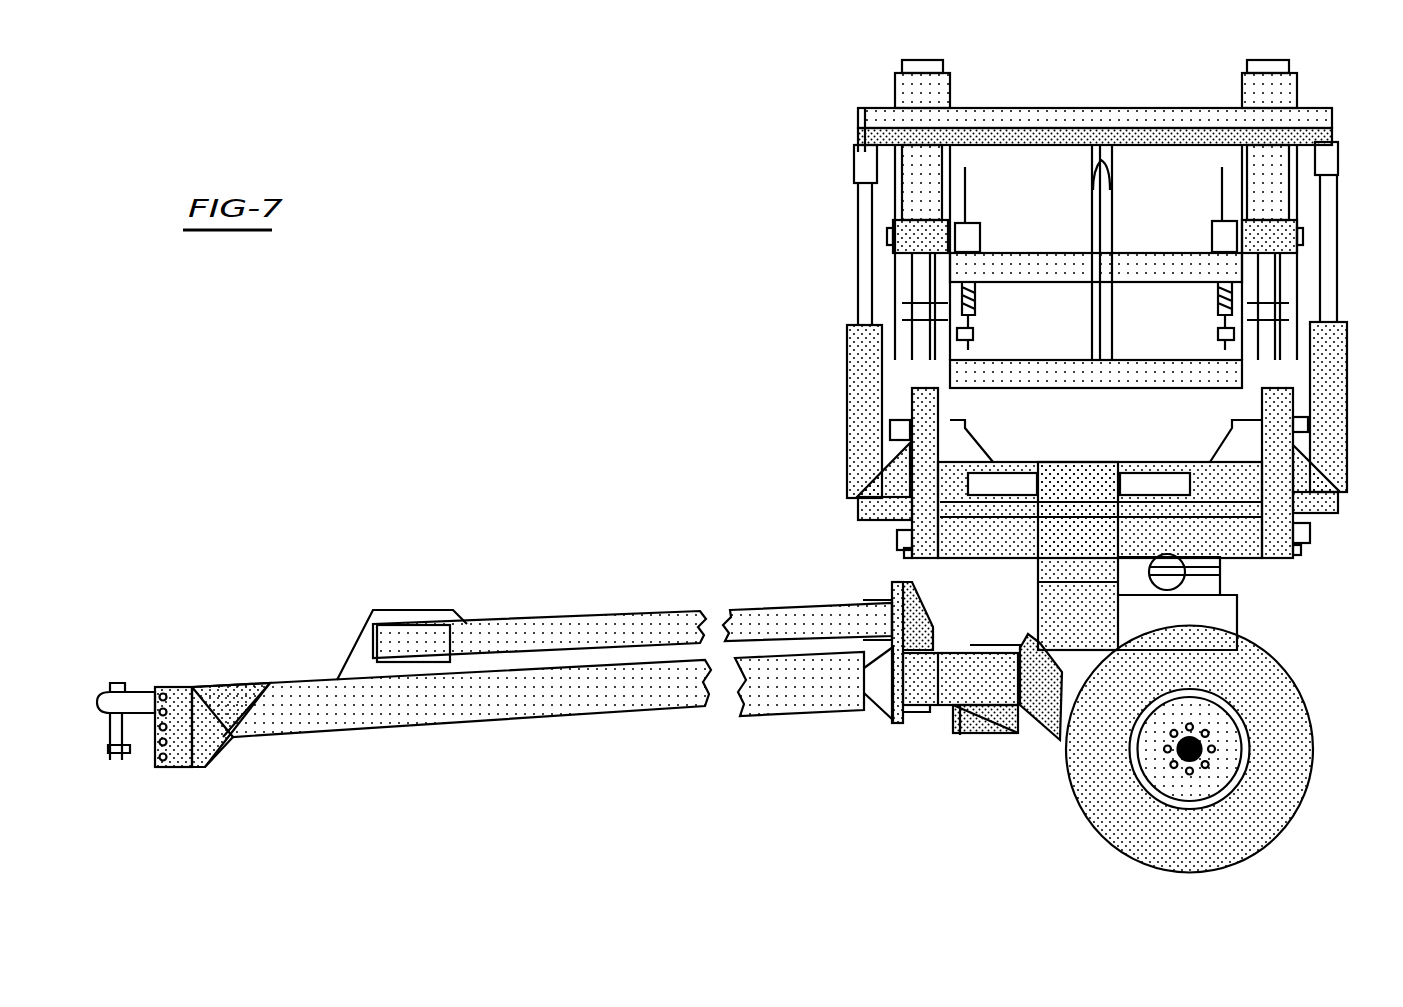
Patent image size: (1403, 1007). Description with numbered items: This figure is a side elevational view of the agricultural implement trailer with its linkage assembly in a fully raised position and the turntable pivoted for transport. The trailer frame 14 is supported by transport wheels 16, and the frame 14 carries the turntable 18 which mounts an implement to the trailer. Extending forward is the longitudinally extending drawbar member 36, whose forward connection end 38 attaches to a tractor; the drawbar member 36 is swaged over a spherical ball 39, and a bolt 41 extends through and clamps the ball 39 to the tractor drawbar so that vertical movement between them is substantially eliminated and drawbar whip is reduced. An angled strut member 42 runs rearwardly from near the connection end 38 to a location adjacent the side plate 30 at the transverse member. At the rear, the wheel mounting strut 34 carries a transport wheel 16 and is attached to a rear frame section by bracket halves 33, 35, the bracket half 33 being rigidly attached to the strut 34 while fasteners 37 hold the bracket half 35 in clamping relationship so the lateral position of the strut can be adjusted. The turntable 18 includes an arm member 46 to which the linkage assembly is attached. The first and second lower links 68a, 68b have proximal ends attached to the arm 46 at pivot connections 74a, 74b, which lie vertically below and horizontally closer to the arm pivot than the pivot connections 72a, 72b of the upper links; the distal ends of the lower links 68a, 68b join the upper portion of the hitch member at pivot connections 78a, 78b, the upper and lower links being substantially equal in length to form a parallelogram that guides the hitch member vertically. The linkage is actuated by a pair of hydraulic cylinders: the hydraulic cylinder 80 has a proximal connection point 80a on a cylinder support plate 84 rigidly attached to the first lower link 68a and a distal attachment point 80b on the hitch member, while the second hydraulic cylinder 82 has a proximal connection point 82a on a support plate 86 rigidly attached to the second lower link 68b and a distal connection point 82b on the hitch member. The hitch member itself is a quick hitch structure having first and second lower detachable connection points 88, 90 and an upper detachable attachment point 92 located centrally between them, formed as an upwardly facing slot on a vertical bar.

The trailer frame 14 is at (364, 661).
The transport wheels 16 is at (1276, 676).
The turntable 18 is at (1018, 576).
The side plate 30 is at (952, 708).
The bracket half 33 is at (970, 735).
The wheel mounting strut 34 is at (1012, 734).
The bracket half 35 is at (1018, 646).
The drawbar member 36 is at (746, 726).
The fasteners 37 is at (968, 736).
The forward connection end 38 is at (162, 683).
The spherical ball 39 is at (140, 690).
The bolt 41 is at (132, 688).
The angled strut member 42 is at (711, 609).
The arm member 46 is at (1040, 572).
The first lower link 68a is at (916, 470).
The second lower link 68b is at (1310, 498).
The pivot connection 72a is at (890, 427).
The pivot connection 72b is at (1308, 426).
The pivot connection 74a is at (900, 560).
The pivot connection 74b is at (1302, 554).
The pivot connection 78a is at (884, 236).
The pivot connection 78b is at (1307, 234).
The hydraulic cylinder 80 is at (862, 364).
The proximal connection point 80a is at (866, 512).
The distal attachment point 80b is at (863, 165).
The second hydraulic cylinder 82 is at (1326, 340).
The proximal connection point 82a is at (1330, 510).
The distal connection point 82b is at (1332, 152).
The cylinder support plate 84 is at (900, 538).
The support plate 86 is at (1312, 530).
The lower detachable connection point 88 is at (922, 370).
The lower detachable connection point 90 is at (1271, 378).
The upper detachable attachment point 92 is at (1102, 244).